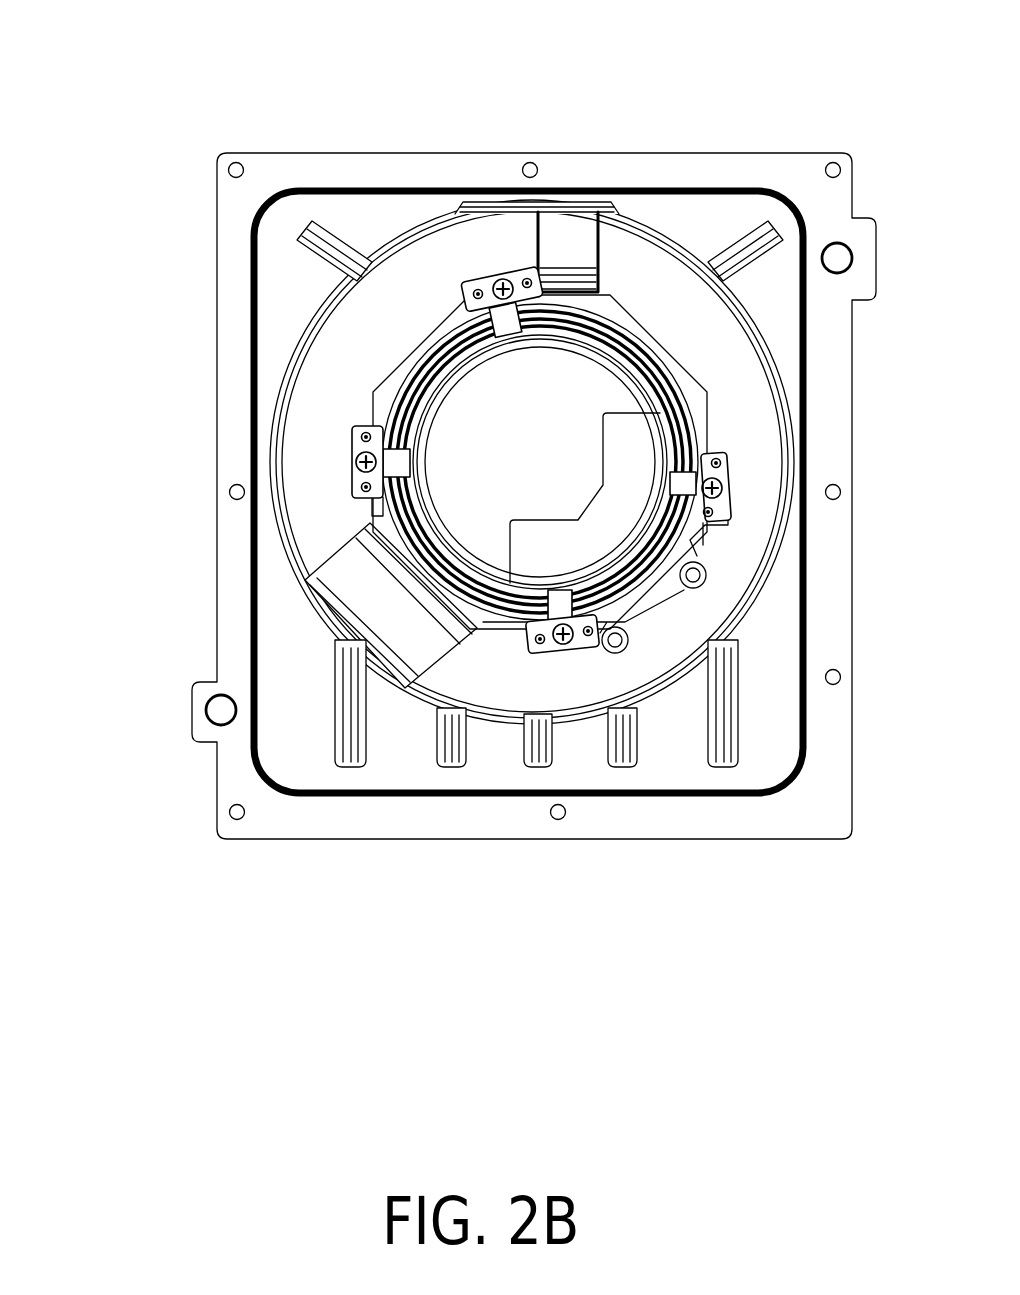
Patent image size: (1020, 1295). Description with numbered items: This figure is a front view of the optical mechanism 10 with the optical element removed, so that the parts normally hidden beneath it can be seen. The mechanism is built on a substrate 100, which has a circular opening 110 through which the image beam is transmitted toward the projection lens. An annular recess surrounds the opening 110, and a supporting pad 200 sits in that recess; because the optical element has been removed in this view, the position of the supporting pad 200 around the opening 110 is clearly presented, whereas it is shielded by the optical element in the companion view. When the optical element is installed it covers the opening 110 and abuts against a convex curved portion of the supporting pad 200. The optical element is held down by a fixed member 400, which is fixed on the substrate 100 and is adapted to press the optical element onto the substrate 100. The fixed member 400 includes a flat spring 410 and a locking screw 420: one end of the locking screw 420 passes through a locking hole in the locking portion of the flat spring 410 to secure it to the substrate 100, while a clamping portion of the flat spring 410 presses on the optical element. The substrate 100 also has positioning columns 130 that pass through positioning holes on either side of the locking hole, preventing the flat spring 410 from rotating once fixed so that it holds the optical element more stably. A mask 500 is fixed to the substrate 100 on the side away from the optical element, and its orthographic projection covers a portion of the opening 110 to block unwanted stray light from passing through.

The optical mechanism 10 is at (150, 31).
The substrate 100 is at (389, 170).
The opening 110 is at (568, 370).
The positioning column 130 is at (376, 486).
The supporting pad 200 is at (628, 345).
The fixed member 400 is at (72, 428).
The flat spring 410 is at (355, 438).
The locking screw 420 is at (357, 466).
The mask 500 is at (638, 440).